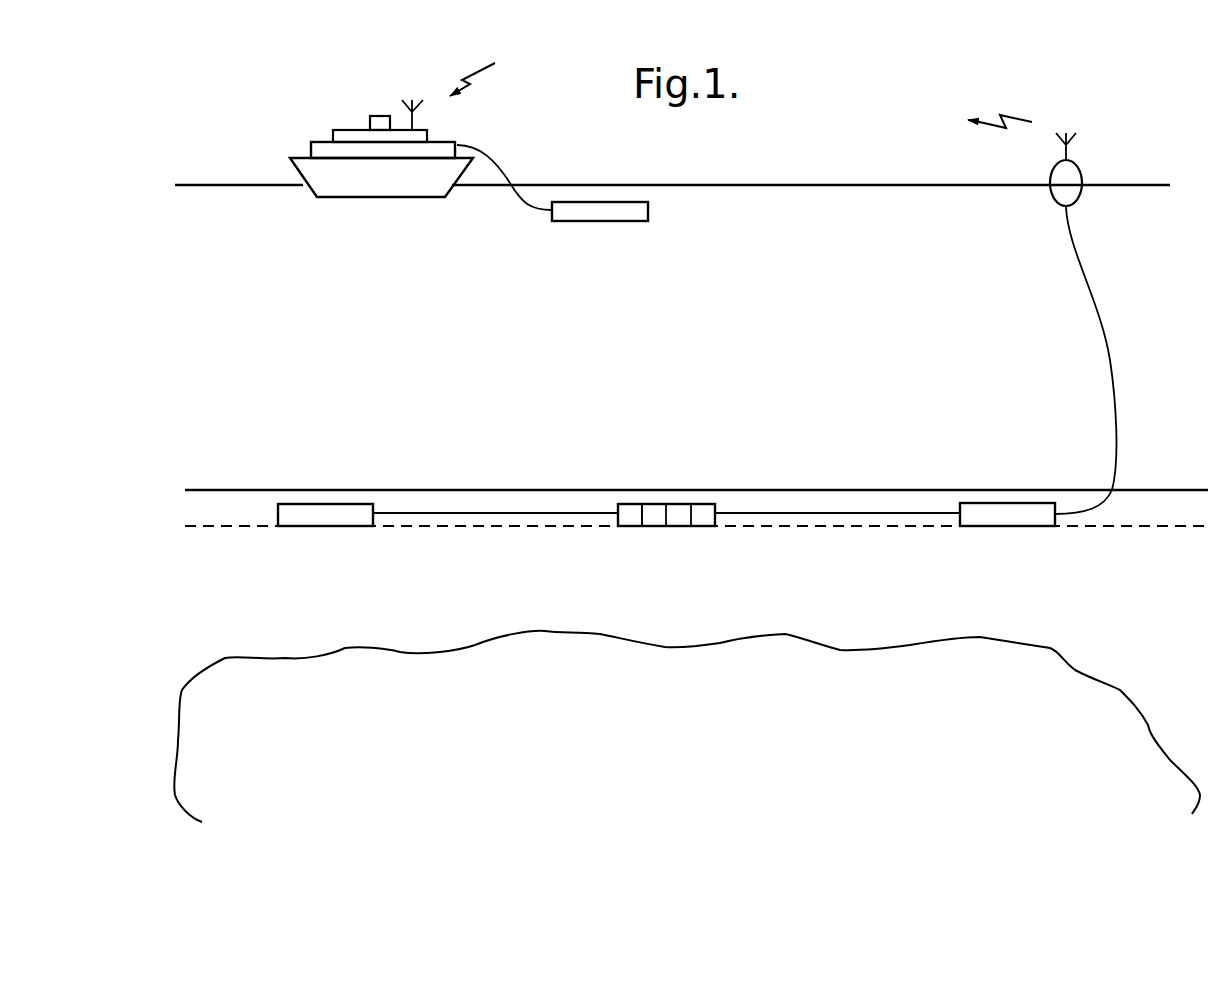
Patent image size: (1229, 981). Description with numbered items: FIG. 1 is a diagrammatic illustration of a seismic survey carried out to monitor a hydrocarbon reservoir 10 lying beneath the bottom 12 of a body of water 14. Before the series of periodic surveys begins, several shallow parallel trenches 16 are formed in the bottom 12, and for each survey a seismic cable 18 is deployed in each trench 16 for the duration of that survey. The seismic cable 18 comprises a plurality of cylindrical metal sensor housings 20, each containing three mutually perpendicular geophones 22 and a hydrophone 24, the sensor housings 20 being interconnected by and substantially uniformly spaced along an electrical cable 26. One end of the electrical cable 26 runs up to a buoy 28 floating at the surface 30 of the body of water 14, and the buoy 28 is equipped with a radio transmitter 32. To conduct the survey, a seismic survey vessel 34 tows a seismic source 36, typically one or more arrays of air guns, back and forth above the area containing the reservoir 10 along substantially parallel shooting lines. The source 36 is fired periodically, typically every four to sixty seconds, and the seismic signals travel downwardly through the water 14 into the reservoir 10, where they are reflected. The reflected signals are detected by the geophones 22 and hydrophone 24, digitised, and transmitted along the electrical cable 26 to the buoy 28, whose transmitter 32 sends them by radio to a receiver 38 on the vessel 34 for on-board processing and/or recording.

The hydrocarbon reservoir 10 is at (612, 730).
The bottom 12 is at (212, 491).
The body of water 14 is at (842, 323).
The trench 16 is at (423, 500).
The seismic cable 18 is at (584, 466).
The sensor housing 20 is at (297, 527).
The geophone 22 is at (704, 510).
The hydrophone 24 is at (625, 521).
The electrical cable 26 is at (1100, 321).
The buoy 28 is at (1073, 195).
The surface 30 is at (906, 186).
The radio transmitter 32 is at (1080, 151).
The seismic survey vessel 34 is at (325, 147).
The seismic source 36 is at (648, 209).
The receiver 38 is at (408, 92).